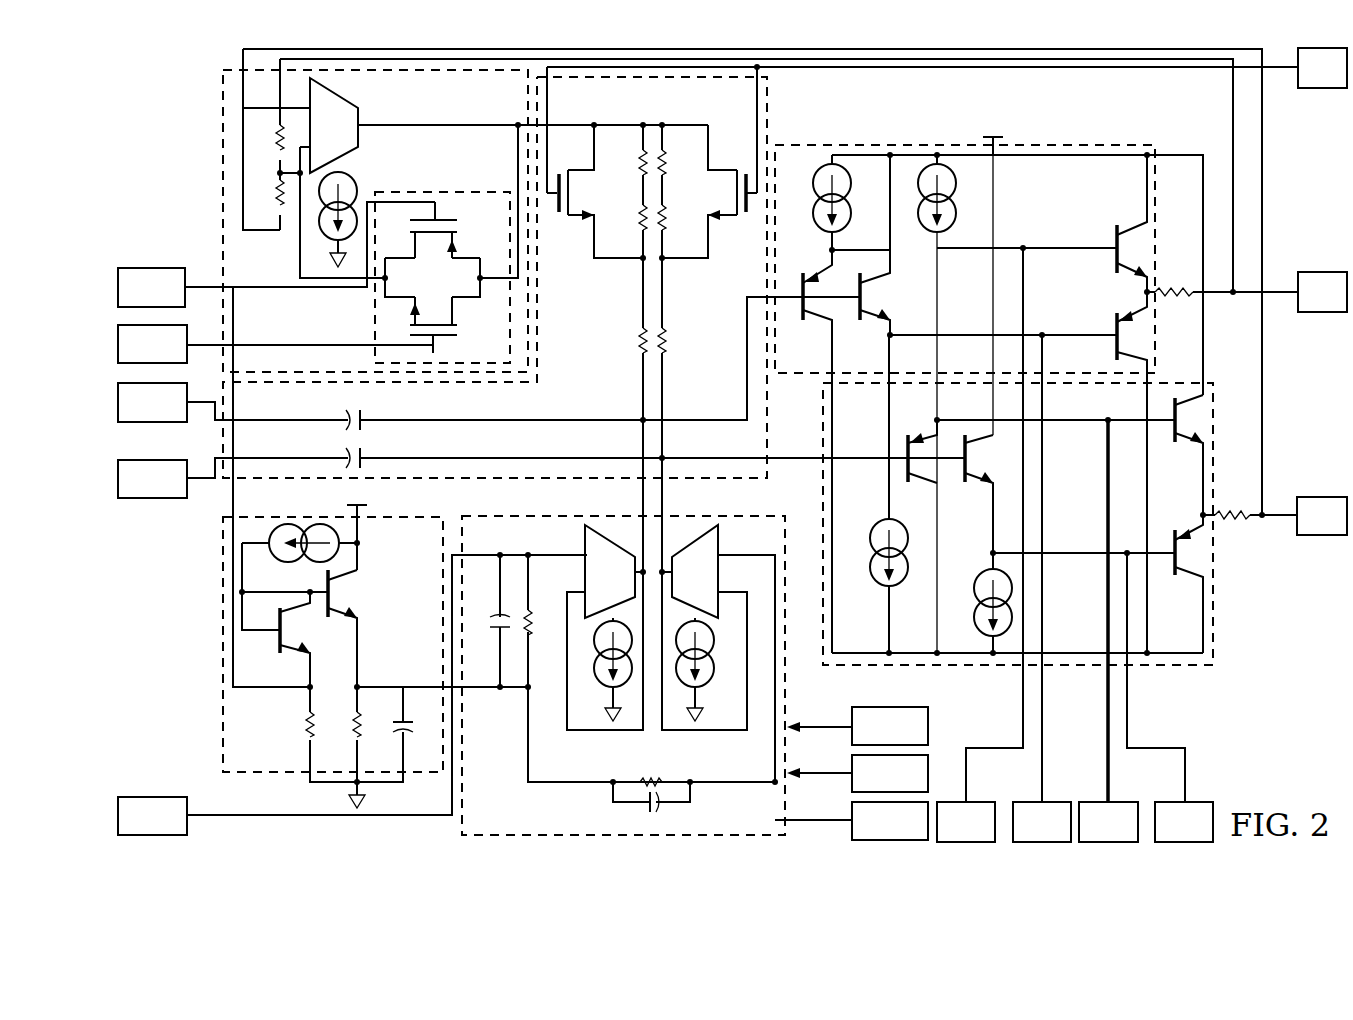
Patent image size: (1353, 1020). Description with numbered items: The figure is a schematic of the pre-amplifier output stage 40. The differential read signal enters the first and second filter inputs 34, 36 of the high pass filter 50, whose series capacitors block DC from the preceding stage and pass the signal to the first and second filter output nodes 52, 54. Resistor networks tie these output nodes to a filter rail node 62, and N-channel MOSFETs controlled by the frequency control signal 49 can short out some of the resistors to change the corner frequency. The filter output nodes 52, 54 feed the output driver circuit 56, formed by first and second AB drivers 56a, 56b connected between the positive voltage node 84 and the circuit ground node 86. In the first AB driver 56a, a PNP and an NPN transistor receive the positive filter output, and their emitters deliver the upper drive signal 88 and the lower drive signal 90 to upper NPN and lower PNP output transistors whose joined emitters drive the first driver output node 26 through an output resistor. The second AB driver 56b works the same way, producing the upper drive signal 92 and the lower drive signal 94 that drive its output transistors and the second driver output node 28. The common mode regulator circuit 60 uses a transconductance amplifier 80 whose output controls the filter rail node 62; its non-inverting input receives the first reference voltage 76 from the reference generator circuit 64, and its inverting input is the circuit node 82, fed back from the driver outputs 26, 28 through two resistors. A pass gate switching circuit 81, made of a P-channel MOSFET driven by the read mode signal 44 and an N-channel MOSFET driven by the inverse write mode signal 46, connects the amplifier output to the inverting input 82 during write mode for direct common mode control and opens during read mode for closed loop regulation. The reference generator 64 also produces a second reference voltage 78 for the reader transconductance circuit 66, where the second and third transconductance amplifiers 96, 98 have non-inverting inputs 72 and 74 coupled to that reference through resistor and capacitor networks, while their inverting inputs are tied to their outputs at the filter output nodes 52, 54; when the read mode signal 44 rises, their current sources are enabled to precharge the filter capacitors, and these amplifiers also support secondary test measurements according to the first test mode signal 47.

The pre-amplifier output stage 40 is at (1270, 714).
The common mode regulator circuit 60 is at (220, 125).
The filter rail node 62 is at (463, 128).
The transconductance amplifier 80 is at (362, 118).
The feedback switching circuit 81 is at (405, 187).
The inverting input node 82 is at (298, 260).
The read mode signal READ 44 is at (213, 284).
The inverse write mode signal NREAD 46 is at (213, 340).
The high pass filter 50 is at (638, 114).
The first filter input 34 is at (208, 410).
The second filter input 36 is at (210, 488).
The first filter output node 52 is at (587, 418).
The second filter output node 54 is at (790, 456).
The reference generator circuit 64 is at (218, 718).
The positive voltage node 84 is at (360, 560).
The second reference voltage 78 is at (360, 635).
The first reference voltage 76 is at (305, 697).
The circuit ground node 86 is at (305, 745).
The non-inverting input INP 72 is at (465, 765).
The reader transconductance circuit 66 is at (556, 819).
The second transconductance amplifier 96 is at (585, 565).
The third transconductance amplifier 98 is at (698, 525).
The first test mode signal 47 is at (812, 725).
The non-inverting input INN 74 is at (812, 818).
The output driver circuit 56 is at (777, 106).
The frequency control signal 49 is at (1175, 70).
The first AB driver 56a is at (1053, 214).
The signal EUP 88 is at (1025, 292).
The signal EDP 90 is at (1044, 626).
The first driver output node 26 is at (1280, 288).
The second AB driver 56b is at (1068, 672).
The signal EUN 92 is at (1107, 590).
The signal EDN 94 is at (1187, 775).
The second driver output node 28 is at (1278, 522).